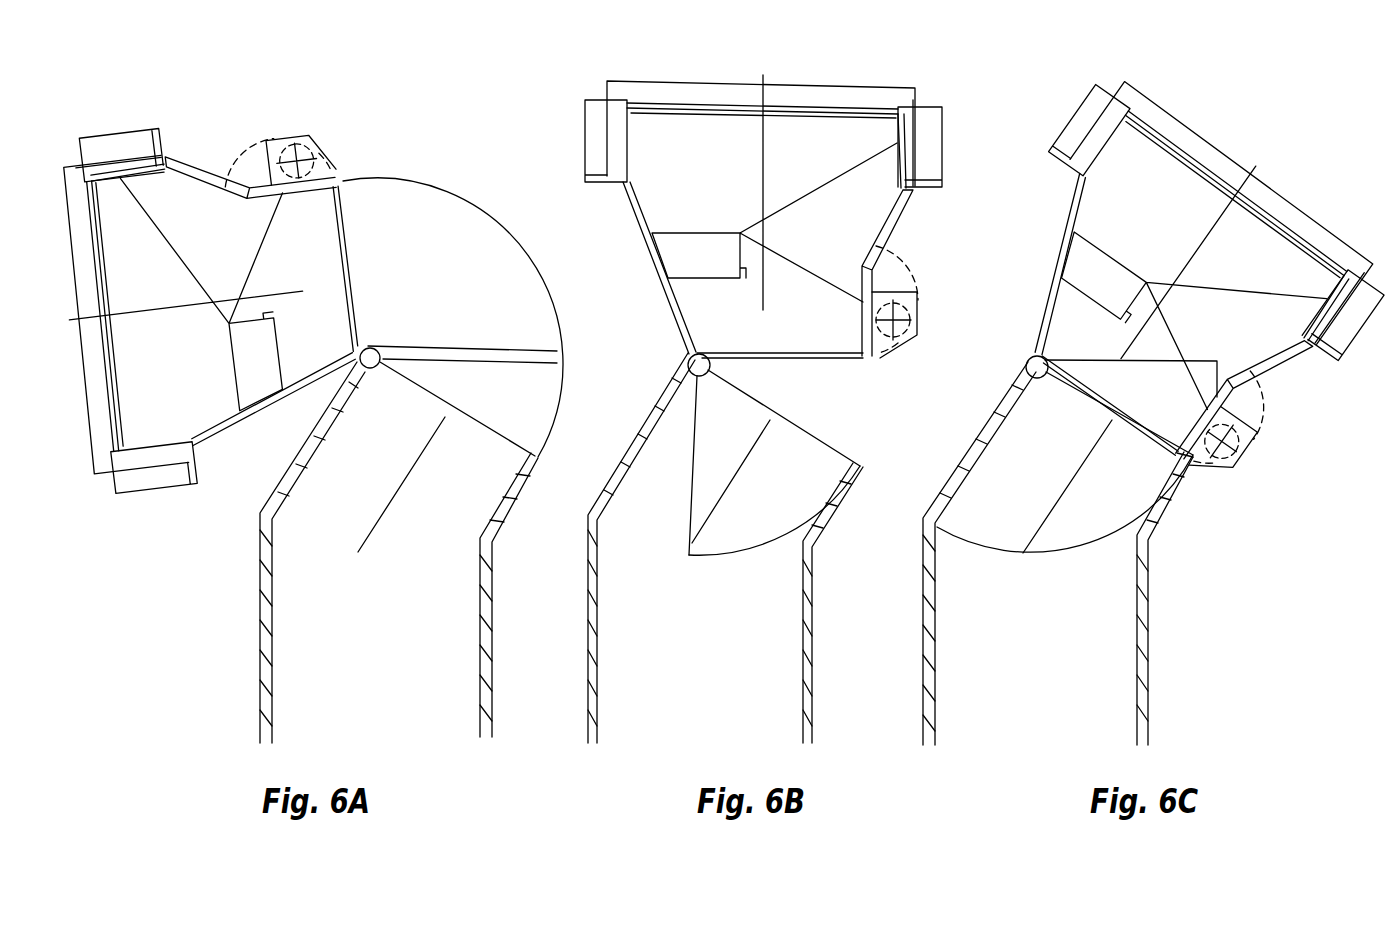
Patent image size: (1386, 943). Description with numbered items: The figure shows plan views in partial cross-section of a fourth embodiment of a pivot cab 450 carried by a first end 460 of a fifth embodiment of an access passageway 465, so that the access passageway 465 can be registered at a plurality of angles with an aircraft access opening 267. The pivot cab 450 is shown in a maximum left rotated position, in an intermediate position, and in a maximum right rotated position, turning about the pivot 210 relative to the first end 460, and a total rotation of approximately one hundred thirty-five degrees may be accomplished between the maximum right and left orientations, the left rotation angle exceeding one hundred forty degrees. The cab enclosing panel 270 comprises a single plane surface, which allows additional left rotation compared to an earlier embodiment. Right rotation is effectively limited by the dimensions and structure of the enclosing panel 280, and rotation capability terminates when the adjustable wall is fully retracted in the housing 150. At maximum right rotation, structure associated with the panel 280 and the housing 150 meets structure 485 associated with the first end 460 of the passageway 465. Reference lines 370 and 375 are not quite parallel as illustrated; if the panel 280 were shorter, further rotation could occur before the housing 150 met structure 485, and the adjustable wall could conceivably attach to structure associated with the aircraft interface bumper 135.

In FIG. 6A, the pivot cab 450 is at (207, 300).
In FIG. 6B, the pivot cab 450 is at (739, 191).
In FIG. 6C, the pivot cab 450 is at (1182, 271).
In FIG. 6A, the aircraft access opening 267 is at (76, 416).
In FIG. 6B, the aircraft access opening 267 is at (843, 80).
In FIG. 6C, the aircraft access opening 267 is at (1306, 210).
In FIG. 6A, the aircraft interface bumper 135 is at (142, 486).
In FIG. 6B, the aircraft interface bumper 135 is at (597, 145).
In FIG. 6C, the aircraft interface bumper 135 is at (1072, 132).
In FIG. 6A, the enclosing panel 280 is at (204, 170).
In FIG. 6B, the enclosing panel 280 is at (903, 218).
In FIG. 6C, the enclosing panel 280 is at (1294, 368).
In FIG. 6A, the housing 150 is at (313, 145).
In FIG. 6B, the housing 150 is at (920, 330).
In FIG. 6C, the housing 150 is at (1254, 448).
In FIG. 6A, the reference line 370 is at (148, 312).
In FIG. 6B, the reference line 370 is at (760, 170).
In FIG. 6C, the reference line 370 is at (1213, 233).
In FIG. 6A, the cab enclosing panel 270 is at (223, 442).
In FIG. 6A, the pivot 210 is at (380, 368).
In FIG. 6B, the pivot 210 is at (713, 380).
In FIG. 6C, the pivot 210 is at (1047, 380).
In FIG. 6A, the reference line 375 is at (408, 483).
In FIG. 6B, the reference line 375 is at (722, 497).
In FIG. 6C, the reference line 375 is at (1067, 495).
In FIG. 6C, the structure 485 is at (1200, 465).
In FIG. 6A, the first end 460 is at (522, 512).
In FIG. 6B, the first end 460 is at (670, 352).
In FIG. 6C, the first end 460 is at (1193, 545).
In FIG. 6A, the access passageway 465 is at (492, 660).
In FIG. 6B, the access passageway 465 is at (812, 623).
In FIG. 6C, the access passageway 465 is at (1148, 700).